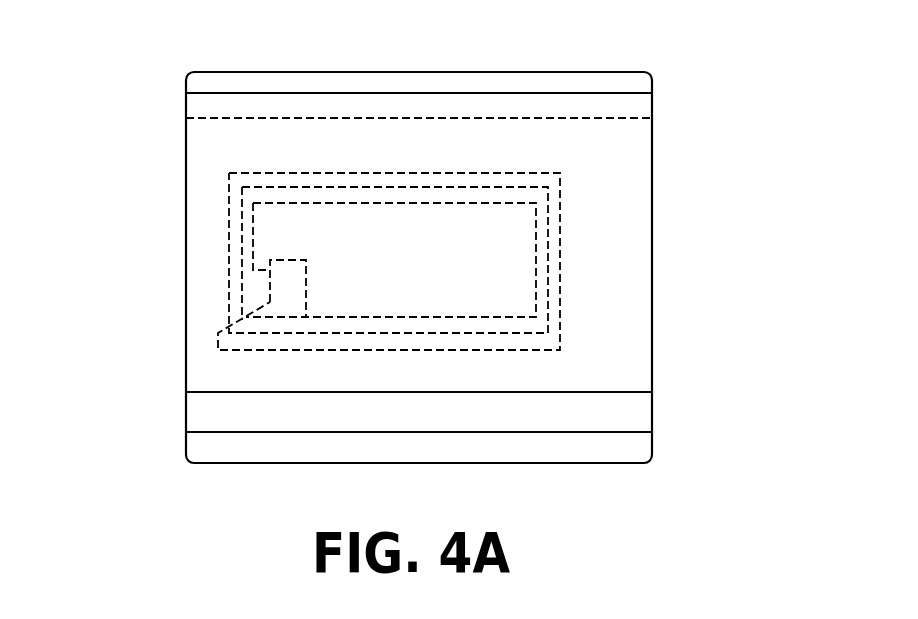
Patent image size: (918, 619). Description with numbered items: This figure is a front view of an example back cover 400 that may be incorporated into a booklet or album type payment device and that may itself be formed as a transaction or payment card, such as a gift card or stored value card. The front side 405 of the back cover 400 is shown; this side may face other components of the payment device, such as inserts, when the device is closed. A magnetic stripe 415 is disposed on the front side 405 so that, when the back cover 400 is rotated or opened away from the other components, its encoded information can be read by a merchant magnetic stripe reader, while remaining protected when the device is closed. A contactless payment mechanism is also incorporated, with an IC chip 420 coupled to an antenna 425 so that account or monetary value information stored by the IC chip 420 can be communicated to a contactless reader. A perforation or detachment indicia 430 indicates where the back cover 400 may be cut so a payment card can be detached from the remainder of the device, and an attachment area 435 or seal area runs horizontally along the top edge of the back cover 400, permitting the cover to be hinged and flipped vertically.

The back cover 400 is at (417, 298).
The front side 405 is at (630, 287).
The magnetic stripe 415 is at (180, 409).
The IC chip 420 is at (290, 289).
The antenna 425 is at (260, 175).
The detachment indicia 430 is at (655, 117).
The attachment area 435 is at (582, 88).